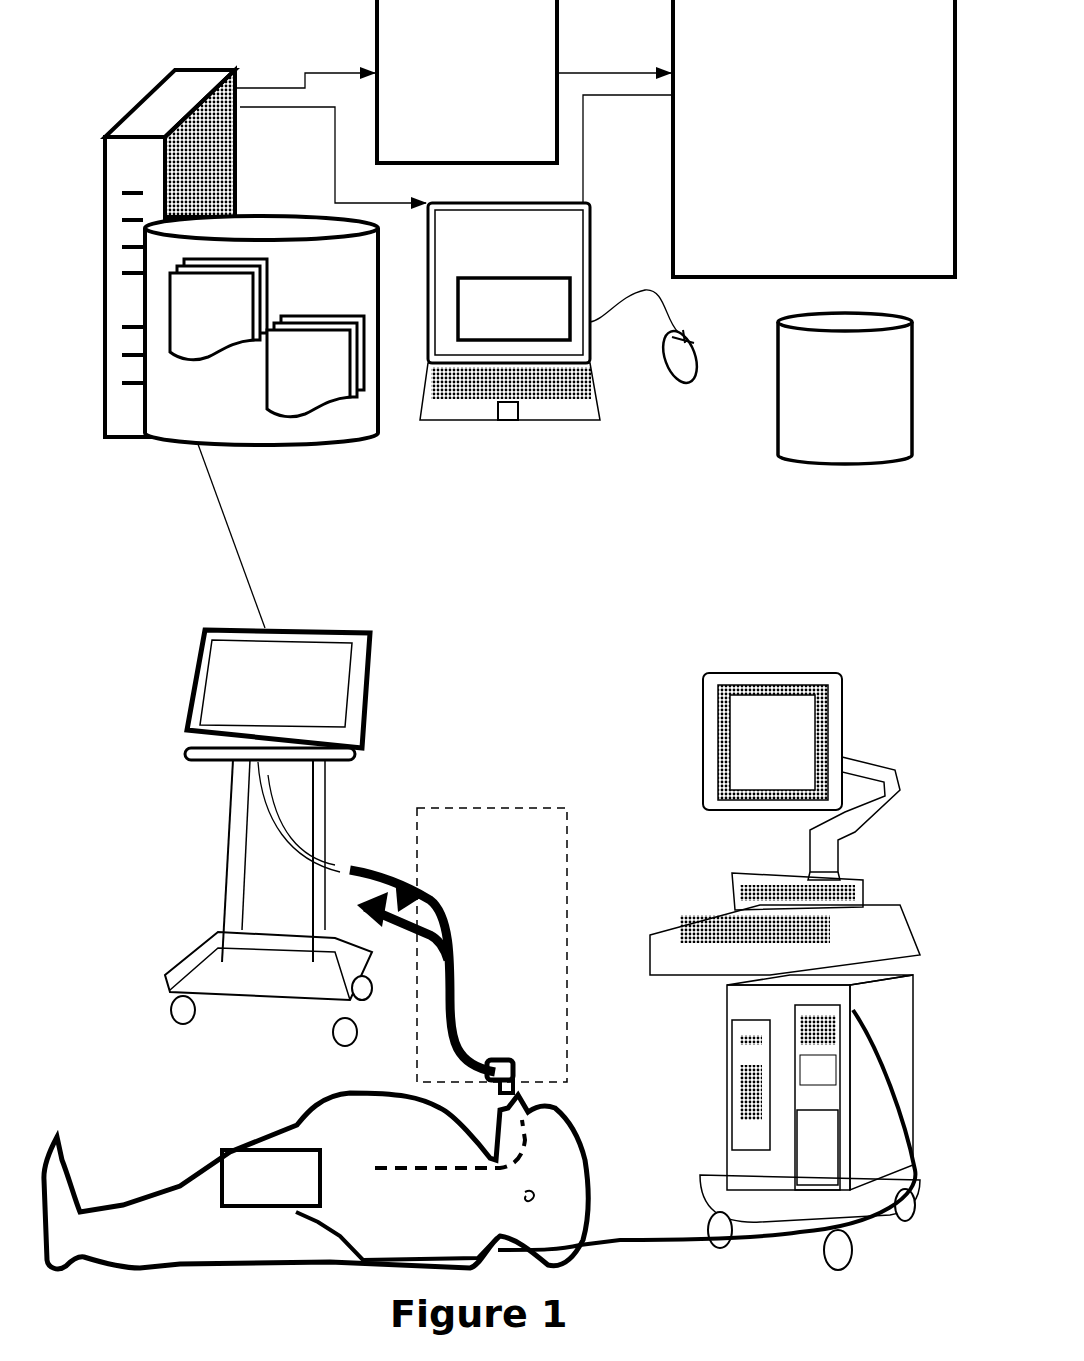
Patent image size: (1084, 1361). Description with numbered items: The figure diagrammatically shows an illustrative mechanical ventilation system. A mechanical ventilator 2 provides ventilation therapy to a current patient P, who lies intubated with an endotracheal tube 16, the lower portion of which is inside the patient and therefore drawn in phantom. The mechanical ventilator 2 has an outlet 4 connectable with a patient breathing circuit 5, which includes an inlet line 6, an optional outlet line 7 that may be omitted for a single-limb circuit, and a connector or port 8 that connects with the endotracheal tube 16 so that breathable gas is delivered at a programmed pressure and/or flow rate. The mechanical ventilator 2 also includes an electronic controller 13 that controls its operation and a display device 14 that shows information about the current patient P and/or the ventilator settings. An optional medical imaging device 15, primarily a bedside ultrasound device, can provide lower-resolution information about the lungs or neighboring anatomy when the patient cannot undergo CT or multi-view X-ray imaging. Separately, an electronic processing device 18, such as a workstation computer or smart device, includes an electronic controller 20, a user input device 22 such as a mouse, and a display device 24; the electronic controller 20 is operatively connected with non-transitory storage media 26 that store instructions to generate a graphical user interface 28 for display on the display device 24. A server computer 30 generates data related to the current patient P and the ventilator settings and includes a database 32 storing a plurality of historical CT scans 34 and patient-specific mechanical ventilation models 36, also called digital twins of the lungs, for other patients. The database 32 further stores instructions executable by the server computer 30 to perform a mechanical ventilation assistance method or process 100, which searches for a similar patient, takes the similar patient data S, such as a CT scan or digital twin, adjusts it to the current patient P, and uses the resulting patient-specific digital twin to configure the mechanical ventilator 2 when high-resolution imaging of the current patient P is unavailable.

The mechanical ventilator 2 is at (231, 829).
The outlet 4 is at (320, 777).
The patient breathing circuit 5 is at (458, 903).
The inlet line 6 is at (453, 953).
The outlet line 7 is at (437, 957).
The connector or port 8 is at (500, 1057).
The electronic controller 13 is at (262, 754).
The display device 14 is at (191, 679).
The medical imaging device 15 is at (662, 711).
The endotracheal tube 16 is at (532, 1147).
The electronic processing device 18 is at (579, 394).
The electronic controller 20 is at (521, 394).
The user input device 22 is at (695, 353).
The display device 24 is at (530, 257).
The non-transitory storage media 26 is at (850, 496).
The graphical user interface 28 is at (528, 323).
The server computer 30 is at (140, 97).
The database 32 is at (261, 387).
The CT scans 34 is at (234, 336).
The patient-specific mechanical ventilation models 36 is at (331, 390).
The mechanical ventilation assistance method or process 100 is at (773, 268).
The current patient P is at (347, 1162).
The similar patient data S is at (520, 140).